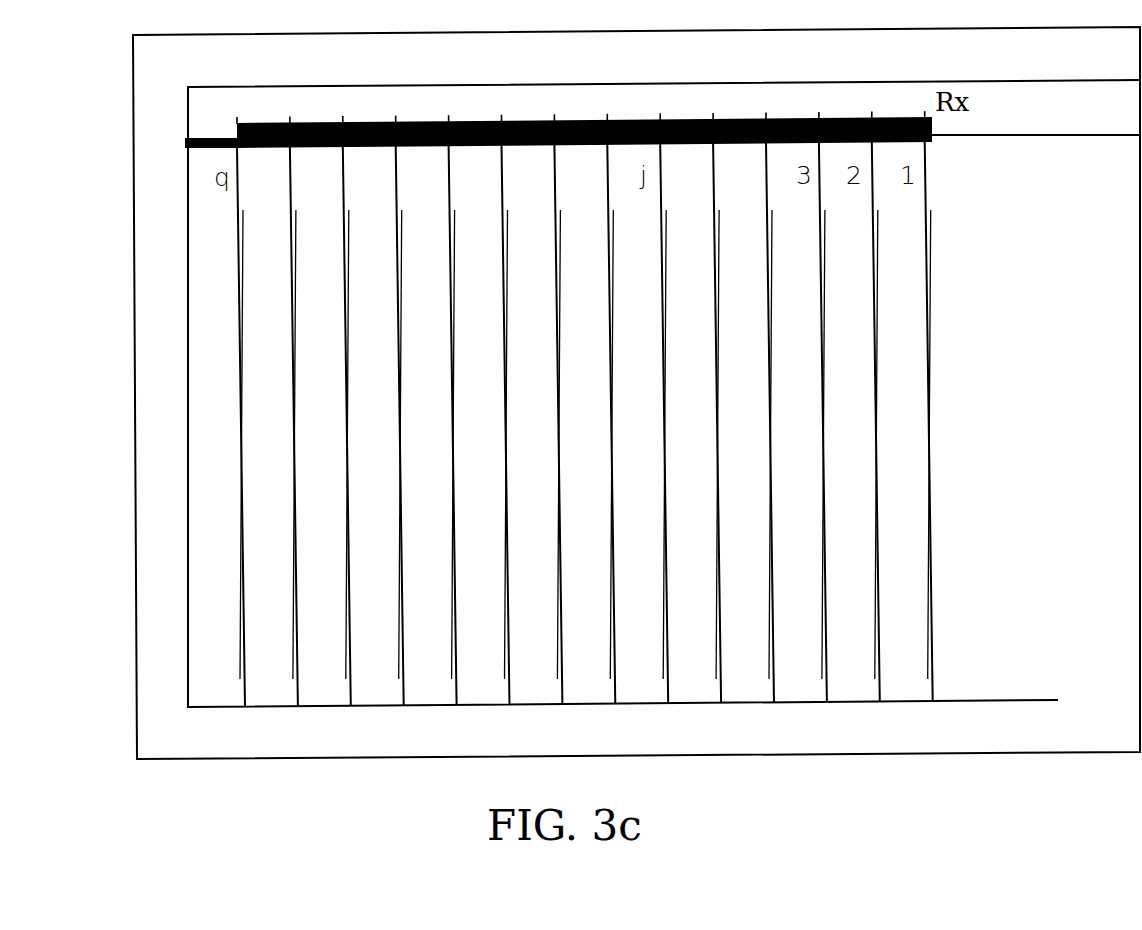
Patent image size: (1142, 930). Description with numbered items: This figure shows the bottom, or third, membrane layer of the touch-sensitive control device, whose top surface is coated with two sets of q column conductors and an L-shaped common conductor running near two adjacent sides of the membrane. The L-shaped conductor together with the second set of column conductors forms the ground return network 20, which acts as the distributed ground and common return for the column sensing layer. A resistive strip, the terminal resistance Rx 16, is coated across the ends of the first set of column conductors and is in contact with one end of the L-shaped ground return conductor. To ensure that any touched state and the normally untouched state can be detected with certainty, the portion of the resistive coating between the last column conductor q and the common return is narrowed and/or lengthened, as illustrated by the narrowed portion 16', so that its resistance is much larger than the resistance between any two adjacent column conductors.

The resistive strip Rx 16 is at (629, 96).
The narrowed portion of resistive coating 16' is at (258, 100).
The ground return network 20 is at (313, 707).